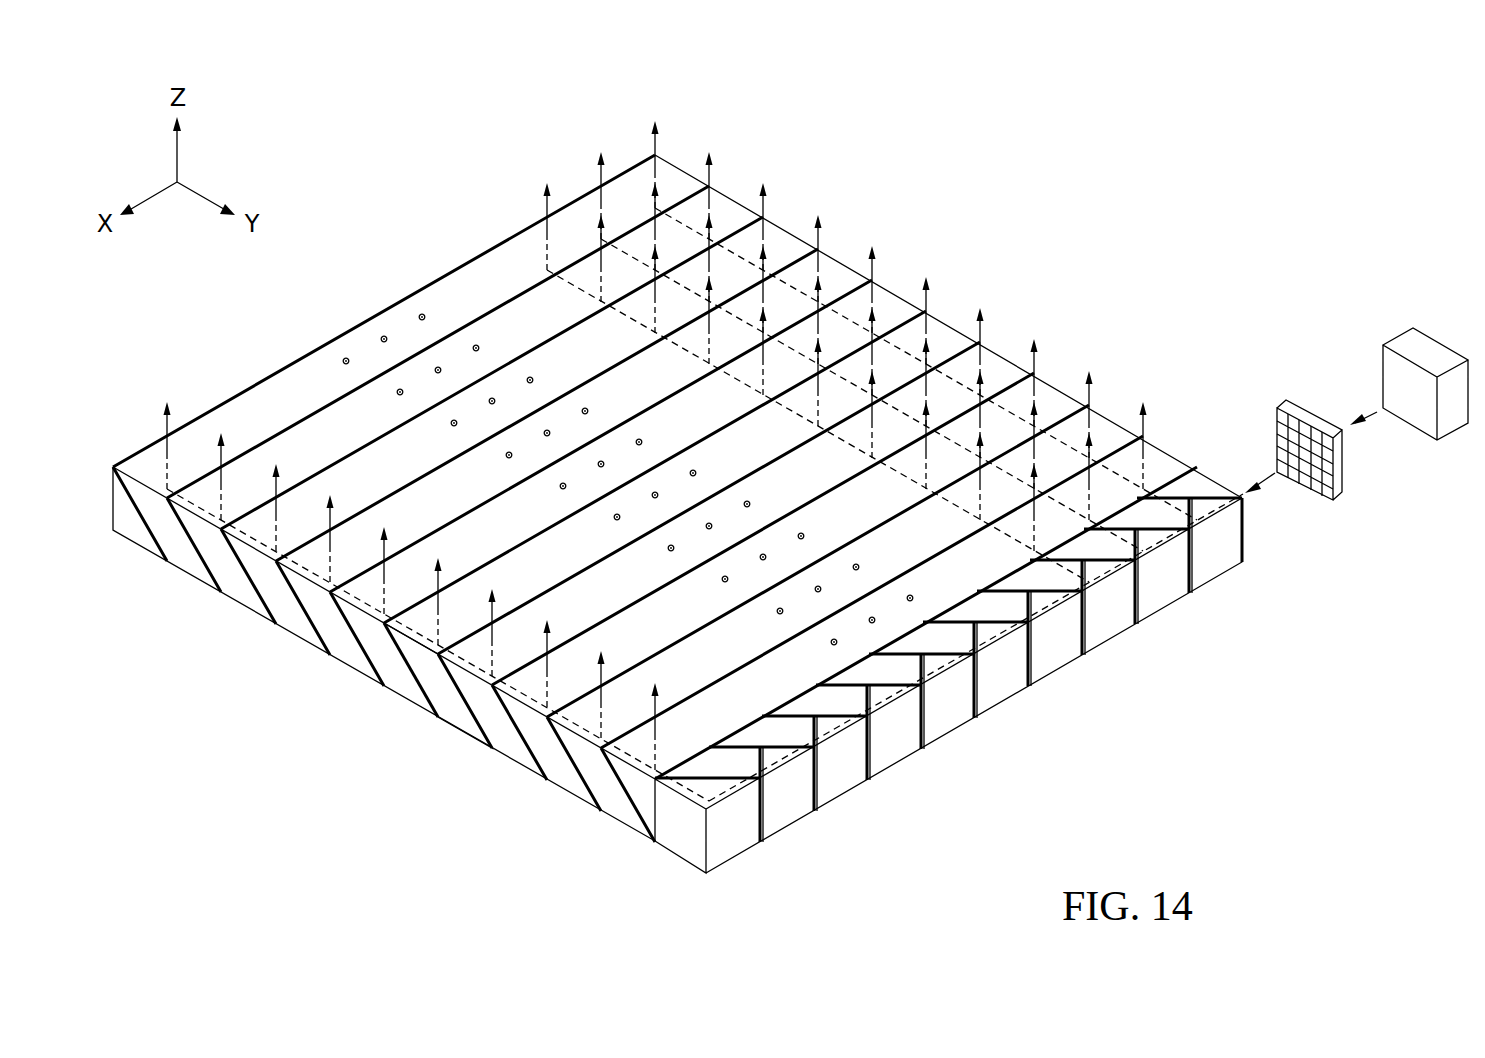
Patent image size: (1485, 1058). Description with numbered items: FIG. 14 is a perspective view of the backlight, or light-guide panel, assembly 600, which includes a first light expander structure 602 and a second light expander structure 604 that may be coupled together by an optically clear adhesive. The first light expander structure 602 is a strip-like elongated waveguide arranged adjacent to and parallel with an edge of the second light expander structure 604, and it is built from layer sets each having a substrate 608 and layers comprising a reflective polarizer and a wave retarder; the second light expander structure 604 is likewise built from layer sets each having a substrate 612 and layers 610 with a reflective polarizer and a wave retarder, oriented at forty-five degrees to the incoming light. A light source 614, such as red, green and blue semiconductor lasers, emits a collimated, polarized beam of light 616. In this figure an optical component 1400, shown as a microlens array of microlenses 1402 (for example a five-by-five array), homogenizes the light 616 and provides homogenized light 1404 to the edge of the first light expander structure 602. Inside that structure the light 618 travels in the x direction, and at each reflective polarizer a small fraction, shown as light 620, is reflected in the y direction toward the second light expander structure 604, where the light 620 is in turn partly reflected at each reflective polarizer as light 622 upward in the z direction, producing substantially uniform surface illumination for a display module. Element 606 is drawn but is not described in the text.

The light-guide panel assembly 600 is at (1185, 167).
The first light expander structure 602 is at (1162, 688).
The second light expander structure 604 is at (750, 152).
The cell block 606 is at (870, 743).
The substrate 608 is at (948, 707).
The layers 610 is at (475, 718).
The substrate 612 is at (437, 687).
The light source 614 is at (1423, 350).
The light 616 is at (1370, 415).
The light 618 is at (952, 637).
The light 620 is at (832, 277).
The light 622 is at (927, 297).
The optical component 1400 is at (1285, 407).
The microlenses 1402 is at (1303, 467).
The homogenized light 1404 is at (1265, 473).